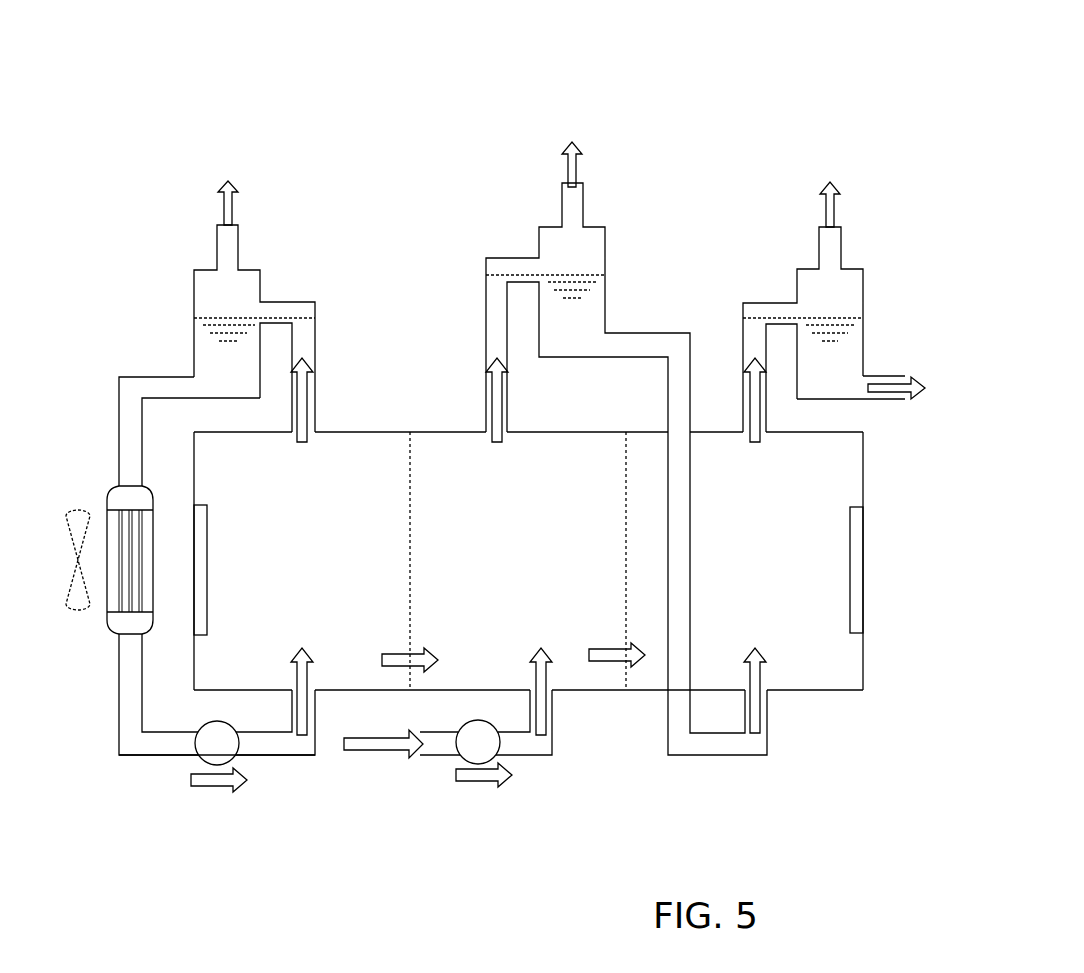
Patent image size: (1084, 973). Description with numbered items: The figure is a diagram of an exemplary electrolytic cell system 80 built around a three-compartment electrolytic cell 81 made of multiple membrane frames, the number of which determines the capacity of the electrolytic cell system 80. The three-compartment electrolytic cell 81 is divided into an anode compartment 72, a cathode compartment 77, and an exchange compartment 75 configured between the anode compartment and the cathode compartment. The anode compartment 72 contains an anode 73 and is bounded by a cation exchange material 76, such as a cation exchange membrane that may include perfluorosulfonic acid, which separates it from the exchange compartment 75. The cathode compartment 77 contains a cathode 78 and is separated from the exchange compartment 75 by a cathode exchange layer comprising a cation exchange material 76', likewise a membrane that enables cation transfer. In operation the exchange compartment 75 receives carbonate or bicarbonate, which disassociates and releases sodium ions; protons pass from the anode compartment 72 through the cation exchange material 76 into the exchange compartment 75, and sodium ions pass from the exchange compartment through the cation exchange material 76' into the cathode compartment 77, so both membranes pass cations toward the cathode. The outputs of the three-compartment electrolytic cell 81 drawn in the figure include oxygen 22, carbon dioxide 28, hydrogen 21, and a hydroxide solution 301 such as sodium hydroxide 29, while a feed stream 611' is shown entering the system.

The electrolytic cell system 80 is at (397, 113).
The three-compartment electrolytic cell 81 is at (215, 427).
The anode compartment 72 is at (350, 457).
The exchange compartment 75 is at (452, 465).
The cathode compartment 77 is at (803, 655).
The cation exchange material 76 is at (367, 561).
The cation exchange material 76' is at (582, 561).
The anode 73 is at (197, 550).
The cathode 78 is at (857, 550).
The oxygen 22 is at (229, 182).
The carbon dioxide 28 is at (573, 150).
The hydrogen 21 is at (831, 184).
The sodium hydroxide 29 is at (880, 384).
The hydroxide solution 301 is at (900, 384).
The feed inlet 611' is at (383, 791).